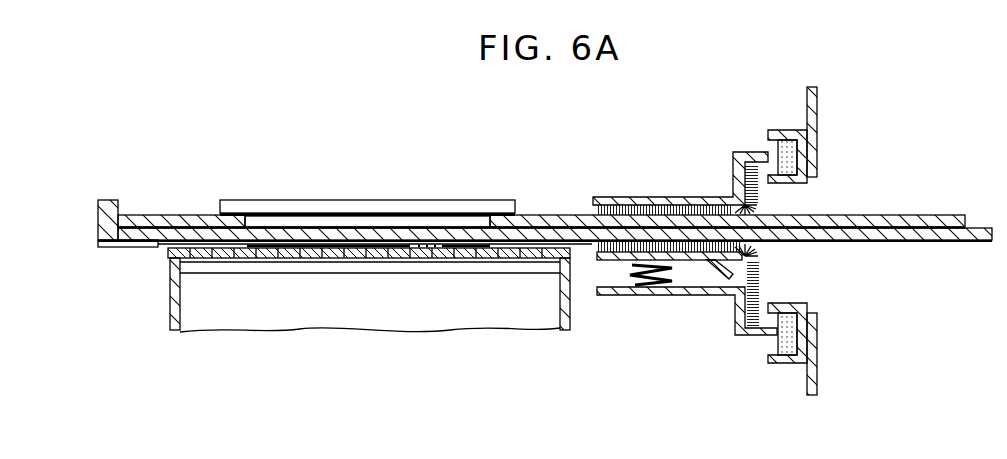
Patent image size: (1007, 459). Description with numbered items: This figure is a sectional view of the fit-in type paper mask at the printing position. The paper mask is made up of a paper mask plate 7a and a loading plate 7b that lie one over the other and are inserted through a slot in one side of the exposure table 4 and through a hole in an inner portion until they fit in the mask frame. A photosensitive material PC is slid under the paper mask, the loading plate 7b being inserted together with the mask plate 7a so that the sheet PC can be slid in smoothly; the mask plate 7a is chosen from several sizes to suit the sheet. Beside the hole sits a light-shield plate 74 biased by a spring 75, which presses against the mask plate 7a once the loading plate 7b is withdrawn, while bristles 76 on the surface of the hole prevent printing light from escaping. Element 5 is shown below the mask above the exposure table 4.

The paper mask plate 7a is at (891, 215).
The loading plate 7b is at (891, 241).
The photosensitive material PC is at (329, 246).
The semiconductor chip row 5 is at (208, 256).
The exposure table 4 is at (365, 303).
The light-shield plate 74 is at (698, 278).
The spring 75 is at (622, 273).
The brush bristles 76 is at (762, 197).